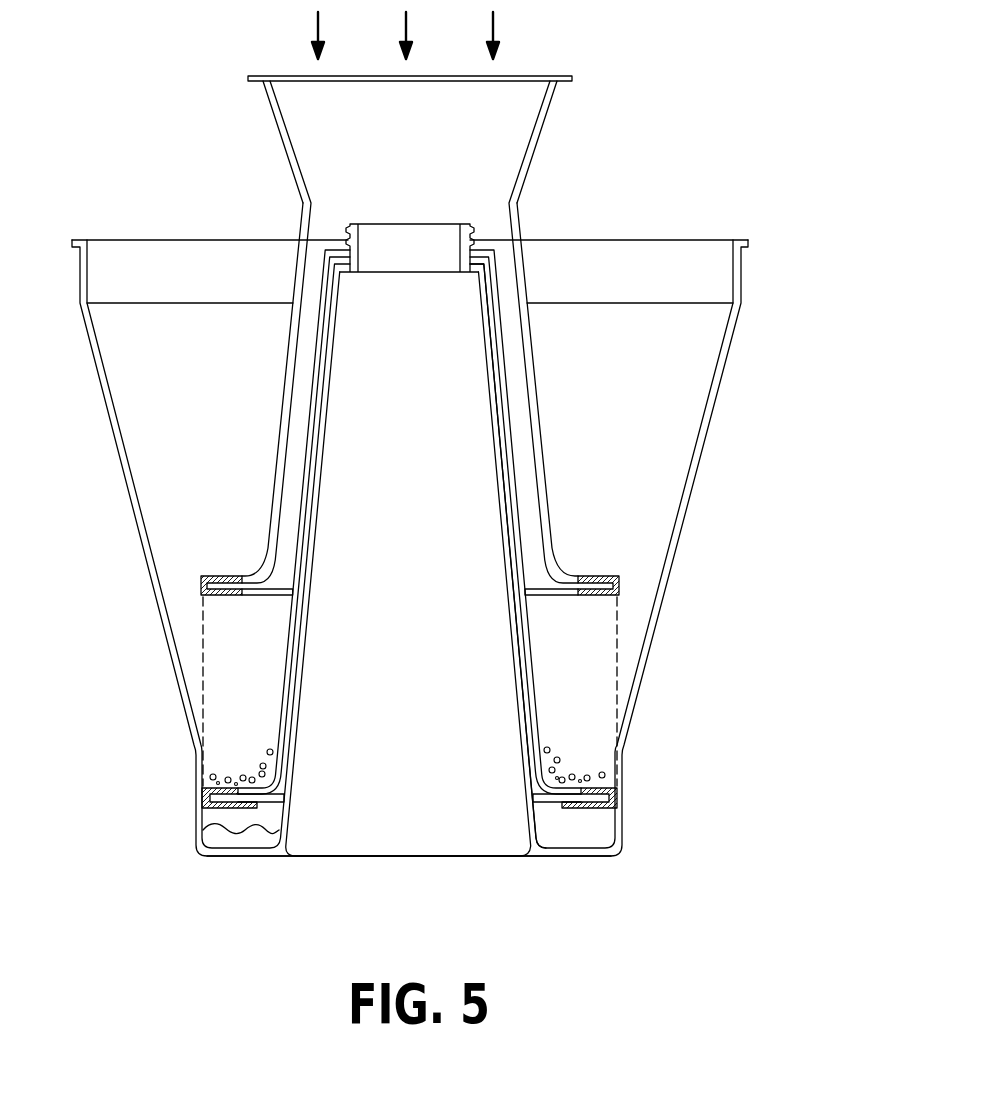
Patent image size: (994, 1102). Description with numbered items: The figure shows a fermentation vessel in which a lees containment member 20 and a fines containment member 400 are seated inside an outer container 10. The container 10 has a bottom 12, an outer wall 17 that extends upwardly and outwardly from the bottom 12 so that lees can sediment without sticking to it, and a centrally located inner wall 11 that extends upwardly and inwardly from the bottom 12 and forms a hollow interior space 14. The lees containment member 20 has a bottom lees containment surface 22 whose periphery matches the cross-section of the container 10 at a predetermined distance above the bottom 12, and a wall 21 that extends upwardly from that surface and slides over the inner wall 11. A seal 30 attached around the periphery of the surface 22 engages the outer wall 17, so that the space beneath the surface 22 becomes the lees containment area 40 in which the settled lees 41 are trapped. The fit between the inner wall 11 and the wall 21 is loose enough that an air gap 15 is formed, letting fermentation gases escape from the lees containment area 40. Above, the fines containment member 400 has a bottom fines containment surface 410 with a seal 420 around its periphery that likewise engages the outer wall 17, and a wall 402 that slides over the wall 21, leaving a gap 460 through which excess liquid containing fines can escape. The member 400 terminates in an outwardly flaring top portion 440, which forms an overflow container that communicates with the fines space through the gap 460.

The container 10 is at (680, 207).
The inner wall 11 is at (530, 815).
The bottom 12 is at (583, 857).
The hollow interior space 14 is at (426, 701).
The air gap 15 is at (541, 788).
The outer wall 17 is at (686, 516).
The lees containment member 20 is at (280, 742).
The wall of lees containment member 21 is at (283, 693).
The bottom lees containment surface 22 is at (537, 805).
The seal 30 is at (617, 800).
The lees containment area 40 is at (225, 813).
The lees 41 is at (218, 838).
The fines containment member 400 is at (353, 329).
The wall of fines containment member 402 is at (274, 492).
The bottom fines containment surface 410 is at (262, 597).
The seal 420 is at (203, 583).
The outwardly flaring top portion 440 is at (285, 148).
The gap 460 is at (305, 363).